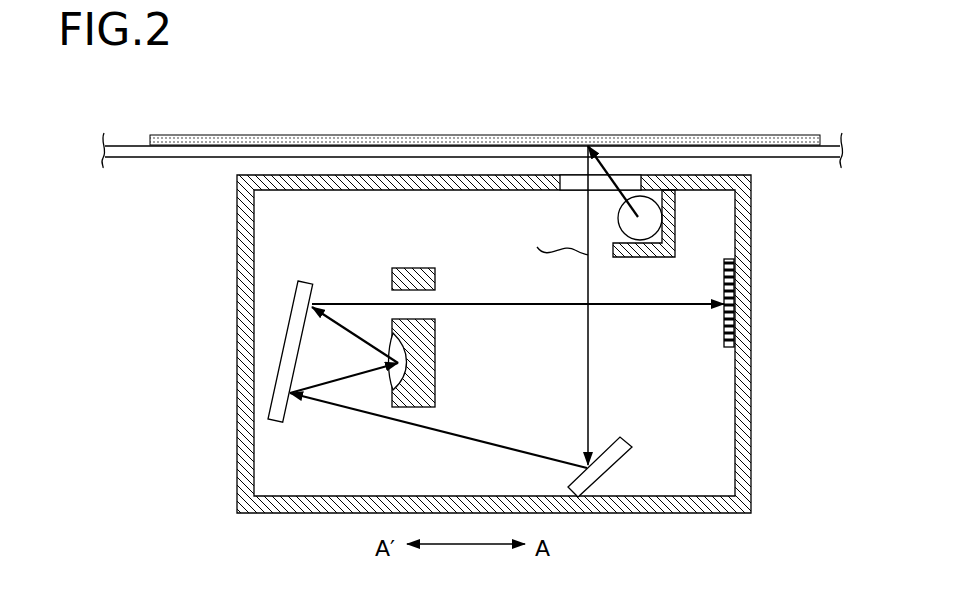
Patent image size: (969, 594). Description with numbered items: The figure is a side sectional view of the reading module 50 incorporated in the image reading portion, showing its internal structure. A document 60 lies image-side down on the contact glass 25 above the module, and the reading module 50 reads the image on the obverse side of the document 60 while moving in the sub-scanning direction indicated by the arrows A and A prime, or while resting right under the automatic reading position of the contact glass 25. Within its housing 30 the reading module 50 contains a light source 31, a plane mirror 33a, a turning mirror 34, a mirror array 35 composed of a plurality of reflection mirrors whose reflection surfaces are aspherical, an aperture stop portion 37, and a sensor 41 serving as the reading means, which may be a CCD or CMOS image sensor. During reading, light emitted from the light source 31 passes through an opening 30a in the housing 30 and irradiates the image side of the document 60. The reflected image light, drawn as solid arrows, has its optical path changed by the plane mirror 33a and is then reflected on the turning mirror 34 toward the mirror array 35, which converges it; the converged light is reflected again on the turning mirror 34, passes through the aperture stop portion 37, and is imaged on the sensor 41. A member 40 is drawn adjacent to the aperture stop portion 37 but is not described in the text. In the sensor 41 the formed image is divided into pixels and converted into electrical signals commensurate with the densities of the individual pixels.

The contact glass 25 is at (128, 145).
The document 60 is at (763, 135).
The reading module 50 is at (788, 266).
The housing 30 is at (751, 432).
The opening 30a is at (574, 187).
The light source 31 is at (640, 226).
The holding member 40 is at (400, 268).
The aperture stop portion 37 is at (436, 312).
The mirror array 35 is at (393, 388).
The turning mirror 34 is at (280, 363).
The plane mirror 33a is at (597, 470).
The sensor 41 is at (724, 337).